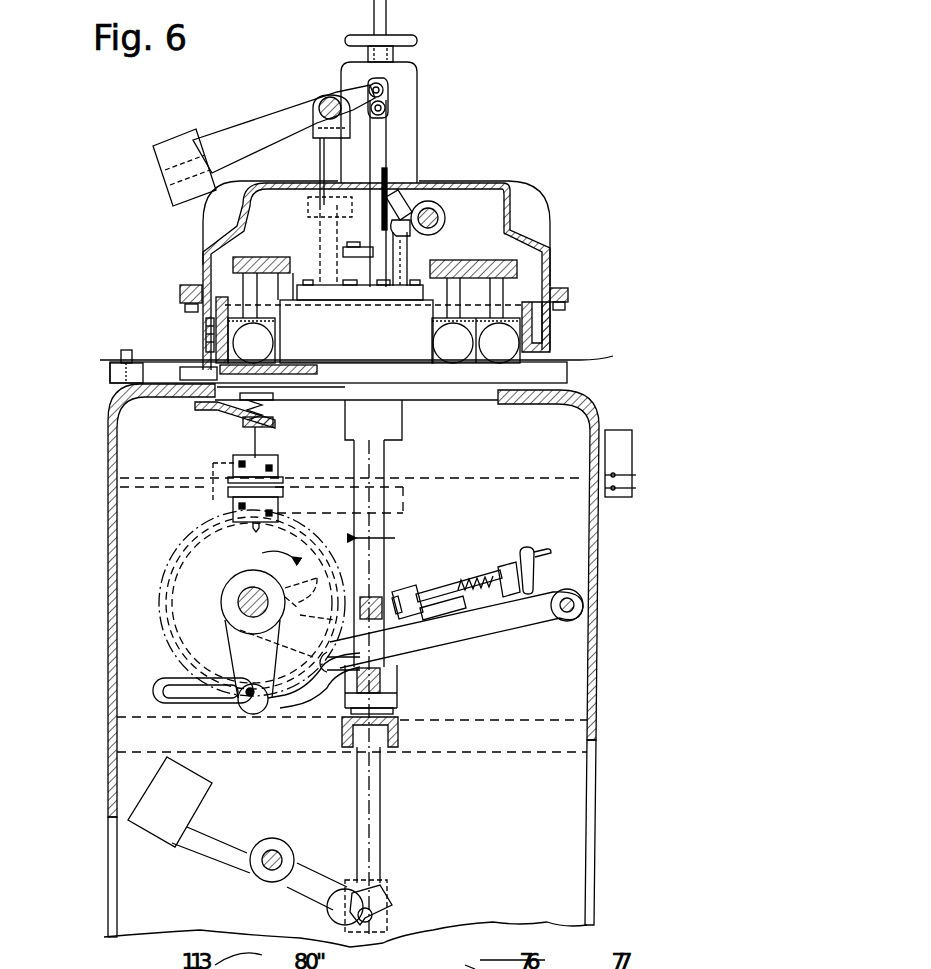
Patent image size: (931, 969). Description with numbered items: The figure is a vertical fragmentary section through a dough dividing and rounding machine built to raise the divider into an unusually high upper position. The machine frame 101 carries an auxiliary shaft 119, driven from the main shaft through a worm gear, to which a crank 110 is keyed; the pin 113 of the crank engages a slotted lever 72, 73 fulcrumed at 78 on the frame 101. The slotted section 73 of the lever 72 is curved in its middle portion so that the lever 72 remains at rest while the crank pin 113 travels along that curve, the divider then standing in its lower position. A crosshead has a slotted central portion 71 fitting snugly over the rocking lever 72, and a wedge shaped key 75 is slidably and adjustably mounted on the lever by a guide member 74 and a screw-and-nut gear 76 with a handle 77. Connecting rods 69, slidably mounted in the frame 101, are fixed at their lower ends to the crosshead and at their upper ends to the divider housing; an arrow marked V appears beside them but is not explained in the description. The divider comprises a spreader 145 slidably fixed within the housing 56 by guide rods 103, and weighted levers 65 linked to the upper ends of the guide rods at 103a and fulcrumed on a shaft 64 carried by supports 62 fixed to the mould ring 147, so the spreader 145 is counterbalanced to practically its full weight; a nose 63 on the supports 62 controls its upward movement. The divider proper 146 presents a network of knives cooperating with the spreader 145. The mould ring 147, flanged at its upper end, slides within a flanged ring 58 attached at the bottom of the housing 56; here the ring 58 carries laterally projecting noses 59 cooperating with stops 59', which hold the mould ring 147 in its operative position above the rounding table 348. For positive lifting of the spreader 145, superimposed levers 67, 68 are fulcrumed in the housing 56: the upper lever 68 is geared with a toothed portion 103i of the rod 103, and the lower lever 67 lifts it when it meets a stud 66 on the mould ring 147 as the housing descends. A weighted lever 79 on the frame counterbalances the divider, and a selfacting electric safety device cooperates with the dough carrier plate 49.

The dough carrier plate 49 is at (560, 368).
The housing 56 is at (550, 251).
The flanged ring 58 is at (545, 329).
The noses 59 is at (165, 331).
The stops 59' is at (146, 354).
The supports 62 is at (328, 161).
The nose 63 is at (340, 250).
The shaft 64 is at (330, 100).
The weighted levers 65 is at (252, 135).
The stud 66 is at (410, 244).
The lower lever 67 is at (421, 204).
The upper lever 68 is at (410, 190).
The connecting rods 69 is at (386, 458).
The slotted central portion 71 is at (383, 670).
The slotted lever 72 is at (511, 621).
The slotted section 73 is at (180, 692).
The guide member 74 is at (451, 620).
The wedge shaped key 75 is at (393, 616).
The screw-and-nut gear 76 is at (498, 585).
The handle 77 is at (548, 570).
The fulcrum 78 is at (584, 604).
The weighted lever 79 is at (220, 838).
The frame 101 is at (590, 712).
The guide rod 103 is at (387, 131).
The linking point 103a is at (388, 92).
The toothed portion 103i is at (310, 212).
The crank 110 is at (240, 660).
The crank pin 113 is at (205, 702).
The auxiliary shaft 119 is at (245, 604).
The spreader 145 is at (203, 246).
The divider proper 146 is at (256, 322).
The mould ring 147 is at (203, 305).
The rounding table 348 is at (560, 378).
The direction of movement V is at (394, 524).